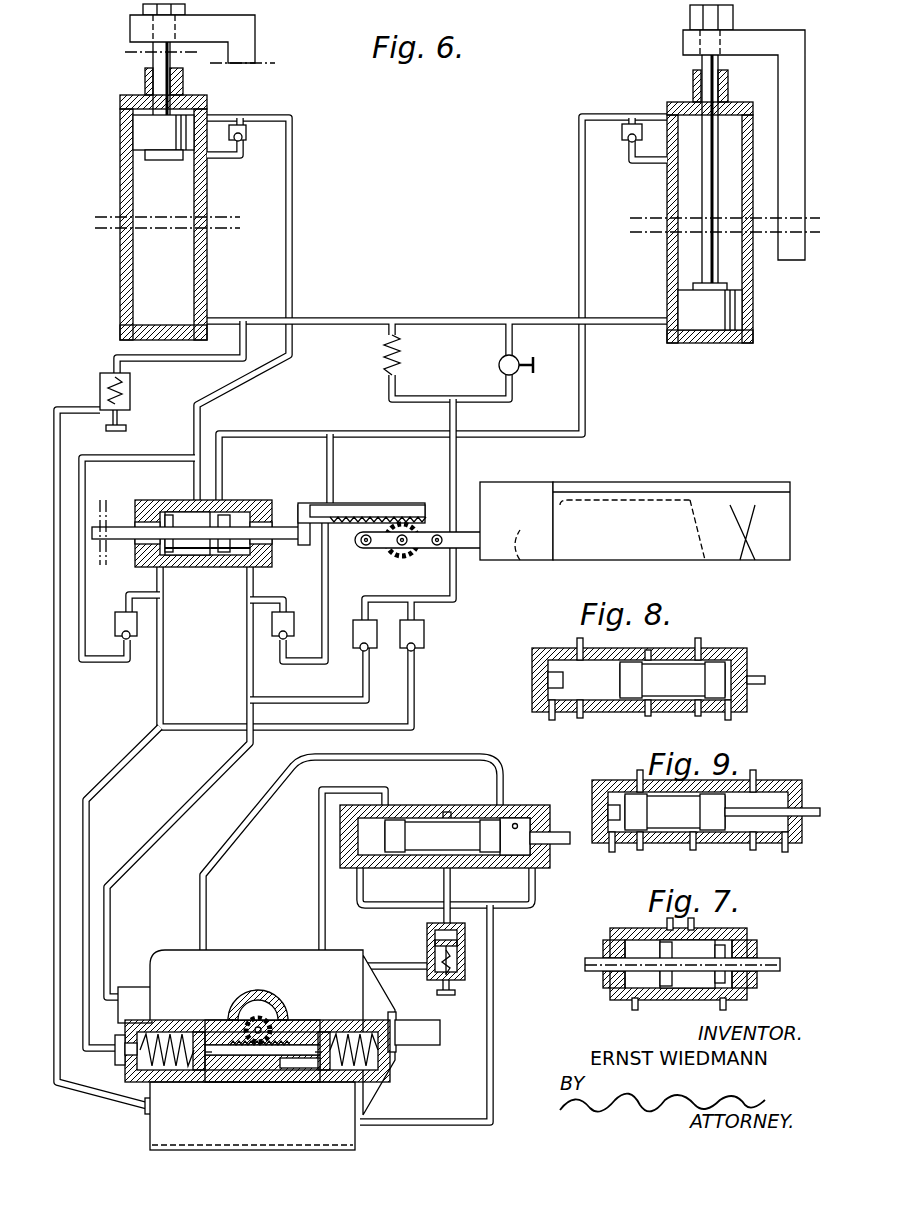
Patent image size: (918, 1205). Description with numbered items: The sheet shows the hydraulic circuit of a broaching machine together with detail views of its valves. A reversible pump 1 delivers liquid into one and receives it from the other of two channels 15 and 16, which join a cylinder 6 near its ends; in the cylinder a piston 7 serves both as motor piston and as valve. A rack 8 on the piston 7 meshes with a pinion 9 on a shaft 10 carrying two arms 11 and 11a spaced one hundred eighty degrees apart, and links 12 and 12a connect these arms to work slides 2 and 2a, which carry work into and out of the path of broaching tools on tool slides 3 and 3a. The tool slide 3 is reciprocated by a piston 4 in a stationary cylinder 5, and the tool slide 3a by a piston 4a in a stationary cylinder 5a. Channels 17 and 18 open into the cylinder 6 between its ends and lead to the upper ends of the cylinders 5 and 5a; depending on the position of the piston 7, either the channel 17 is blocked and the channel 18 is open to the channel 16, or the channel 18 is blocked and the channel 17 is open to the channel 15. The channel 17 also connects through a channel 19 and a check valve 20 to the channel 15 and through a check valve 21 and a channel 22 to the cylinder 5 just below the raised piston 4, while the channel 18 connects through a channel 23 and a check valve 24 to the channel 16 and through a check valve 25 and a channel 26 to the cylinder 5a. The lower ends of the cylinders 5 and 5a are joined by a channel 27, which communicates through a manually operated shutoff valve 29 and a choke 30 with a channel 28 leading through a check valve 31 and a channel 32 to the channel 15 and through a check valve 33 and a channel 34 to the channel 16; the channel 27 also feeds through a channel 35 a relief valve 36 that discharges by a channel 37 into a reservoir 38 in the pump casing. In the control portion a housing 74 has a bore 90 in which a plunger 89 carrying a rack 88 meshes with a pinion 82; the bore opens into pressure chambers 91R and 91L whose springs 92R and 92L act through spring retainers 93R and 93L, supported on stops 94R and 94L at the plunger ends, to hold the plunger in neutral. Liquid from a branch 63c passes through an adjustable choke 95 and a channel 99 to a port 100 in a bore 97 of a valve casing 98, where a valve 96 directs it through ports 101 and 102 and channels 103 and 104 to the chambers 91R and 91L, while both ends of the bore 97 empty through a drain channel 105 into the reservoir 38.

In FIG. 6, the pump 1 is at (258, 968).
In FIG. 6, the work slide 2 is at (585, 462).
In FIG. 6, the work slide 2a is at (495, 482).
In FIG. 6, the tool slide 3 is at (246, 63).
In FIG. 6, the tool slide 3a is at (683, 42).
In FIG. 6, the piston 4 is at (163, 101).
In FIG. 6, the piston 4a is at (710, 192).
In FIG. 6, the cylinder 5 is at (120, 180).
In FIG. 6, the cylinder 5a is at (667, 268).
In FIG. 6, the cylinder 6 is at (166, 500).
In FIG. 7, the cylinder 6 is at (603, 945).
In FIG. 6, the piston 7 is at (201, 532).
In FIG. 7, the piston 7 is at (682, 964).
In FIG. 6, the rack 8 is at (365, 508).
In FIG. 6, the pinion 9 is at (408, 555).
In FIG. 6, the shaft 10 is at (398, 558).
In FIG. 6, the arm 11 is at (428, 532).
In FIG. 6, the arm 11a is at (372, 548).
In FIG. 6, the link 12 is at (542, 560).
In FIG. 6, the link 12a is at (525, 560).
In FIG. 6, the channel 15 is at (128, 772).
In FIG. 7, the channel 15 is at (632, 1005).
In FIG. 6, the channel 16 is at (180, 812).
In FIG. 7, the channel 16 is at (727, 1005).
In FIG. 6, the channel 17 is at (292, 232).
In FIG. 7, the channel 17 is at (667, 922).
In FIG. 6, the channel 18 is at (580, 183).
In FIG. 7, the channel 18 is at (695, 922).
In FIG. 6, the channel 19 is at (165, 458).
In FIG. 6, the check valve 20 is at (118, 625).
In FIG. 6, the check valve 21 is at (246, 137).
In FIG. 6, the channel 22 is at (238, 160).
In FIG. 6, the channel 23 is at (327, 466).
In FIG. 6, the check valve 24 is at (285, 630).
In FIG. 6, the check valve 25 is at (628, 136).
In FIG. 6, the channel 26 is at (643, 165).
In FIG. 6, the channel 27 is at (462, 305).
In FIG. 6, the channel 28 is at (450, 414).
In FIG. 6, the shutoff valve 29 is at (499, 365).
In FIG. 6, the choke 30 is at (383, 356).
In FIG. 6, the check valve 31 is at (424, 633).
In FIG. 6, the channel 32 is at (415, 697).
In FIG. 6, the check valve 33 is at (370, 650).
In FIG. 6, the channel 34 is at (296, 685).
In FIG. 6, the channel 35 is at (200, 360).
In FIG. 6, the relief valve 36 is at (100, 379).
In FIG. 6, the channel 37 is at (60, 712).
In FIG. 6, the reservoir 38 is at (162, 1130).
In FIG. 6, the branch 63c is at (395, 965).
In FIG. 6, the housing 74 is at (240, 1020).
In FIG. 6, the pinion 82 is at (264, 1028).
In FIG. 6, the rack 88 is at (236, 1056).
In FIG. 6, the plunger 89 is at (270, 1058).
In FIG. 6, the bore 90 is at (296, 1068).
In FIG. 6, the pressure chamber 91L is at (130, 1066).
In FIG. 6, the pressure chamber 91R is at (378, 1060).
In FIG. 6, the spring 92L is at (195, 1066).
In FIG. 6, the spring 92R is at (330, 1070).
In FIG. 6, the spring retainer 93L is at (205, 1068).
In FIG. 6, the spring retainer 93R is at (320, 1070).
In FIG. 6, the stop 94L is at (185, 1045).
In FIG. 6, the stop 94R is at (340, 1045).
In FIG. 6, the choke 95 is at (433, 970).
In FIG. 6, the valve 96 is at (477, 836).
In FIG. 8, the valve 96 is at (692, 680).
In FIG. 9, the valve 96 is at (722, 812).
In FIG. 6, the bore 97 is at (517, 818).
In FIG. 8, the bore 97 is at (560, 695).
In FIG. 9, the bore 97 is at (788, 832).
In FIG. 6, the valve casing 98 is at (548, 855).
In FIG. 8, the valve casing 98 is at (748, 668).
In FIG. 9, the valve casing 98 is at (795, 790).
In FIG. 6, the channel 99 is at (440, 880).
In FIG. 8, the channel 99 is at (648, 716).
In FIG. 9, the channel 99 is at (697, 850).
In FIG. 6, the port 100 is at (447, 810).
In FIG. 8, the port 100 is at (652, 640).
In FIG. 6, the port 101 is at (390, 810).
In FIG. 8, the port 101 is at (580, 712).
In FIG. 9, the port 101 is at (640, 850).
In FIG. 6, the port 102 is at (478, 878).
In FIG. 8, the port 102 is at (697, 712).
In FIG. 9, the port 102 is at (752, 850).
In FIG. 6, the channel 103 is at (318, 832).
In FIG. 8, the channel 103 is at (578, 642).
In FIG. 9, the channel 103 is at (638, 774).
In FIG. 6, the channel 104 is at (207, 870).
In FIG. 8, the channel 104 is at (700, 645).
In FIG. 9, the channel 104 is at (765, 766).
In FIG. 6, the drain channel 105 is at (488, 1052).
In FIG. 8, the drain channel 105 is at (552, 716).
In FIG. 9, the drain channel 105 is at (786, 850).